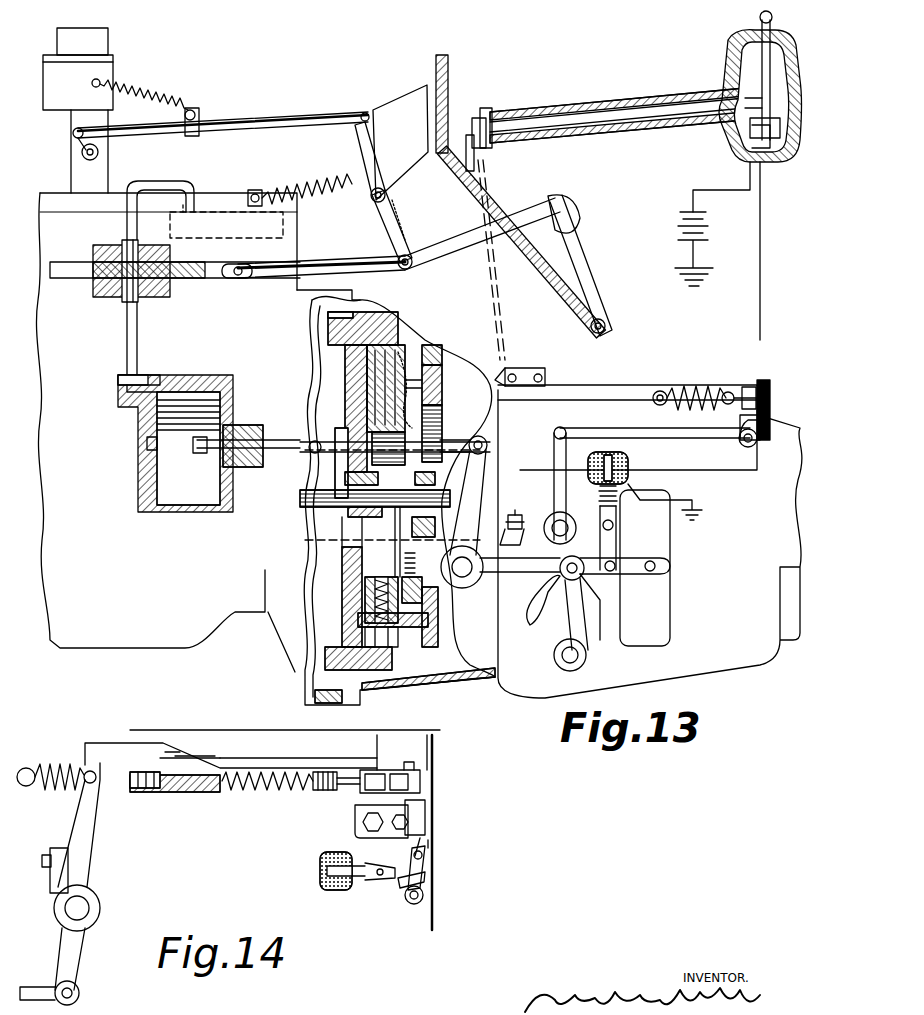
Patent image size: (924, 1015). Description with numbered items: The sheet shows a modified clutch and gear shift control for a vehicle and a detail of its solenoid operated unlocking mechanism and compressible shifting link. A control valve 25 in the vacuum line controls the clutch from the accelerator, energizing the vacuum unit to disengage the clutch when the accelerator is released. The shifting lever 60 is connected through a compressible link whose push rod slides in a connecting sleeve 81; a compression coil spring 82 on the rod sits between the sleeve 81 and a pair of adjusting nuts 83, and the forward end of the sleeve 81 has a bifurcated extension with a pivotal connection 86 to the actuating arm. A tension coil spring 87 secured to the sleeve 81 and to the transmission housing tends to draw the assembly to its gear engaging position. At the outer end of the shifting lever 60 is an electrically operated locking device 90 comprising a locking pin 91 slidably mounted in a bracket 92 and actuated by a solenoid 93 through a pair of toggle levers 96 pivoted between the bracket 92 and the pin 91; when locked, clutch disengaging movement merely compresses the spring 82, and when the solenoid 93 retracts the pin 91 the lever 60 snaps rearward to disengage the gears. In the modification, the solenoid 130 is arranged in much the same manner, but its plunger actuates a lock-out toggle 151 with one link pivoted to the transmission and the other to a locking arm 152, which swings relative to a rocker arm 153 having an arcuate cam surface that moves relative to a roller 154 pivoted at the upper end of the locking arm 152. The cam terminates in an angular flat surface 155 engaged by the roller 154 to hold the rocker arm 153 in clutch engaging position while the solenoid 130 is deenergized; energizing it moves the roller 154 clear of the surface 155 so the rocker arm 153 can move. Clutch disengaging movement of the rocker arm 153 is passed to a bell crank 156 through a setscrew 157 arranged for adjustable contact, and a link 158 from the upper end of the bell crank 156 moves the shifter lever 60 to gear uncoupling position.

In FIG. 13, the control valve 25 is at (160, 292).
In FIG. 13, the shifting lever 60 is at (748, 446).
In FIG. 14, the shifting lever 60 is at (410, 762).
In FIG. 14, the connecting sleeve 81 is at (190, 793).
In FIG. 14, the compression coil spring 82 is at (262, 793).
In FIG. 14, the adjusting nuts 83 is at (325, 792).
In FIG. 14, the pivotal connection 86 is at (102, 777).
In FIG. 14, the tension coil spring 87 is at (76, 764).
In FIG. 14, the electrically operated locking device 90 is at (430, 840).
In FIG. 14, the locking pin 91 is at (432, 850).
In FIG. 14, the bracket 92 is at (427, 818).
In FIG. 14, the solenoid 93 is at (335, 892).
In FIG. 14, the toggle levers 96 is at (432, 885).
In FIG. 13, the knob 130 is at (625, 495).
In FIG. 13, the lock-out toggle 151 is at (622, 578).
In FIG. 13, the locking arm 152 is at (563, 635).
In FIG. 13, the rocker arm 153 is at (532, 590).
In FIG. 13, the roller 154 is at (560, 610).
In FIG. 13, the angular flat surface 155 is at (698, 392).
In FIG. 13, the bell crank 156 is at (560, 487).
In FIG. 13, the setscrew 157 is at (518, 500).
In FIG. 13, the link 158 is at (618, 428).